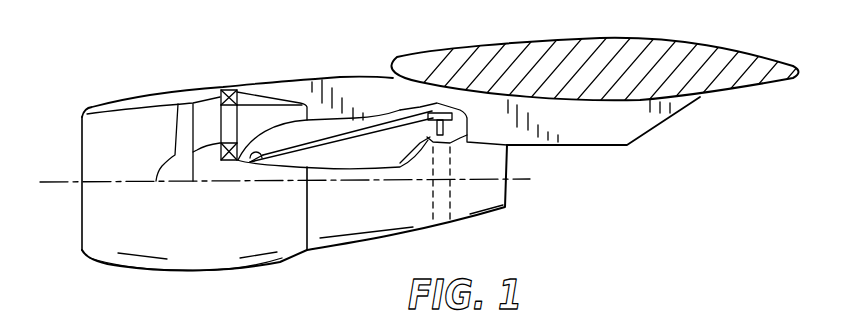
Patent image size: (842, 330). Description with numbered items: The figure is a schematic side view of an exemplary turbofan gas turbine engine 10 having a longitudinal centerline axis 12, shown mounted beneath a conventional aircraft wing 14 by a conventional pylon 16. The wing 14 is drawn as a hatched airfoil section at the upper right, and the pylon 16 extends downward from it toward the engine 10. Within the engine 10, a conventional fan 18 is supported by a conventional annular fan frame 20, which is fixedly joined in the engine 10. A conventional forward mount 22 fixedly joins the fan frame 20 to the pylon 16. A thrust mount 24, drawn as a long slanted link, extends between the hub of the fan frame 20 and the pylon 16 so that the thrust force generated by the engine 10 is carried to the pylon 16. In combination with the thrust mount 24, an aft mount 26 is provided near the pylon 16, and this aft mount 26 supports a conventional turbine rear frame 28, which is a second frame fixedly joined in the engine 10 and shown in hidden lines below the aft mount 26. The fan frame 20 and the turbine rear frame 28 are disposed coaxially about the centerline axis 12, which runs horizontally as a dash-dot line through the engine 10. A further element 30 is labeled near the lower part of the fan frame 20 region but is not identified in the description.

The turbofan gas turbine engine 10 is at (116, 96).
The longitudinal centerline axis 12 is at (55, 182).
The wing 14 is at (673, 42).
The pylon 16 is at (657, 127).
The fan 18 is at (183, 123).
The fan frame 20 is at (250, 115).
The forward mount 22 is at (228, 92).
The thrust mount 24 is at (343, 120).
The aft mount 26 is at (467, 127).
The turbine rear frame 28 is at (433, 197).
The fairing bump 30 is at (251, 160).